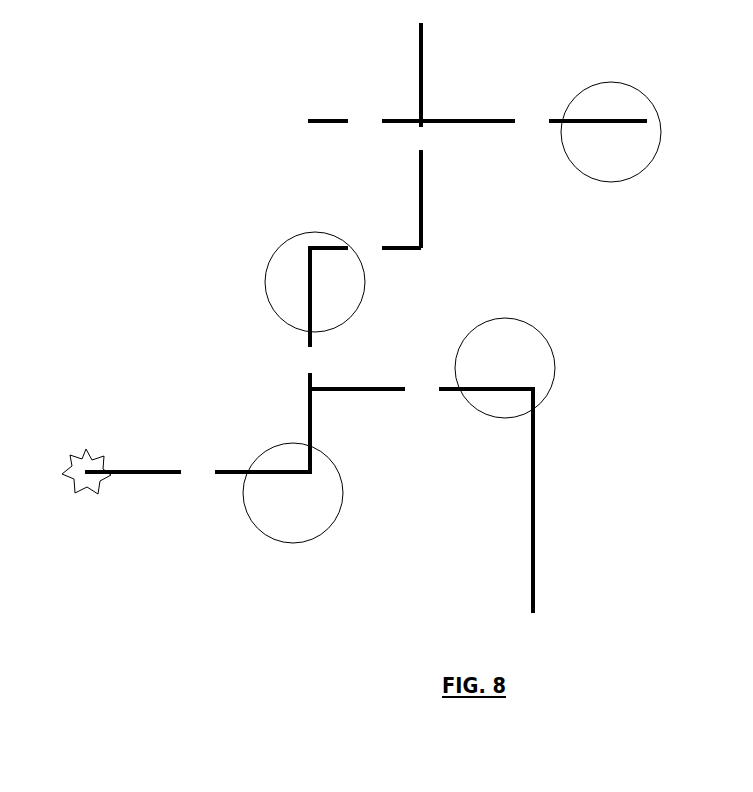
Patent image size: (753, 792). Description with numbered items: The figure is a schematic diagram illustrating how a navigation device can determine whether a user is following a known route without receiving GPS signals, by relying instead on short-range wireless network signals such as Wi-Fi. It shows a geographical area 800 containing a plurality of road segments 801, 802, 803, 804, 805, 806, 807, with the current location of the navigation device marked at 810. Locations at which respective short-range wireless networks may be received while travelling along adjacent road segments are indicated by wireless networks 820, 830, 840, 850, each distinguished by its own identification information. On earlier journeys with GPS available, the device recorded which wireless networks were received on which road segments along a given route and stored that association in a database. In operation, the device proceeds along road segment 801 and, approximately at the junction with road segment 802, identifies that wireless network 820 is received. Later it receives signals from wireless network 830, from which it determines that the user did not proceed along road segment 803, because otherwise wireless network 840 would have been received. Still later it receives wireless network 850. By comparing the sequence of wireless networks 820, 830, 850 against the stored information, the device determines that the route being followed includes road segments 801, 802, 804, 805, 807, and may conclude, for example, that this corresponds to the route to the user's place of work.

The geographical area 800 is at (198, 50).
The road segment 801 is at (198, 471).
The road segment 802 is at (308, 360).
The road segment 803 is at (422, 494).
The road segment 804 is at (365, 249).
The road segment 805 is at (422, 135).
The road segment 806 is at (364, 120).
The road segment 807 is at (534, 120).
The current location of navigation device 810 is at (66, 463).
The wireless network 820 is at (293, 493).
The wireless network 830 is at (315, 282).
The wireless network 840 is at (505, 368).
The wireless network 850 is at (611, 132).